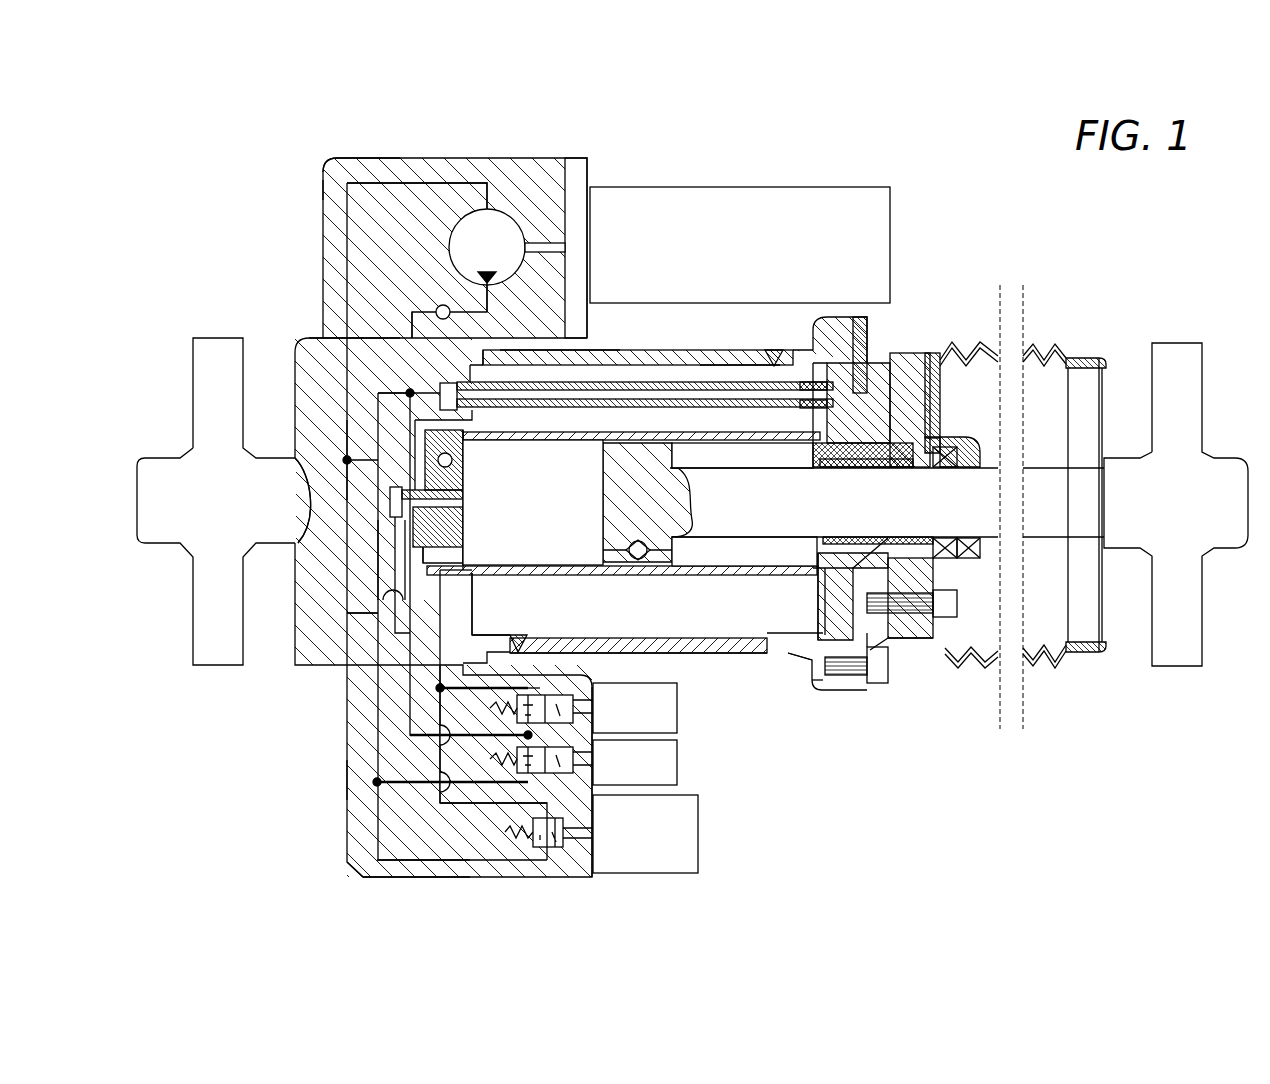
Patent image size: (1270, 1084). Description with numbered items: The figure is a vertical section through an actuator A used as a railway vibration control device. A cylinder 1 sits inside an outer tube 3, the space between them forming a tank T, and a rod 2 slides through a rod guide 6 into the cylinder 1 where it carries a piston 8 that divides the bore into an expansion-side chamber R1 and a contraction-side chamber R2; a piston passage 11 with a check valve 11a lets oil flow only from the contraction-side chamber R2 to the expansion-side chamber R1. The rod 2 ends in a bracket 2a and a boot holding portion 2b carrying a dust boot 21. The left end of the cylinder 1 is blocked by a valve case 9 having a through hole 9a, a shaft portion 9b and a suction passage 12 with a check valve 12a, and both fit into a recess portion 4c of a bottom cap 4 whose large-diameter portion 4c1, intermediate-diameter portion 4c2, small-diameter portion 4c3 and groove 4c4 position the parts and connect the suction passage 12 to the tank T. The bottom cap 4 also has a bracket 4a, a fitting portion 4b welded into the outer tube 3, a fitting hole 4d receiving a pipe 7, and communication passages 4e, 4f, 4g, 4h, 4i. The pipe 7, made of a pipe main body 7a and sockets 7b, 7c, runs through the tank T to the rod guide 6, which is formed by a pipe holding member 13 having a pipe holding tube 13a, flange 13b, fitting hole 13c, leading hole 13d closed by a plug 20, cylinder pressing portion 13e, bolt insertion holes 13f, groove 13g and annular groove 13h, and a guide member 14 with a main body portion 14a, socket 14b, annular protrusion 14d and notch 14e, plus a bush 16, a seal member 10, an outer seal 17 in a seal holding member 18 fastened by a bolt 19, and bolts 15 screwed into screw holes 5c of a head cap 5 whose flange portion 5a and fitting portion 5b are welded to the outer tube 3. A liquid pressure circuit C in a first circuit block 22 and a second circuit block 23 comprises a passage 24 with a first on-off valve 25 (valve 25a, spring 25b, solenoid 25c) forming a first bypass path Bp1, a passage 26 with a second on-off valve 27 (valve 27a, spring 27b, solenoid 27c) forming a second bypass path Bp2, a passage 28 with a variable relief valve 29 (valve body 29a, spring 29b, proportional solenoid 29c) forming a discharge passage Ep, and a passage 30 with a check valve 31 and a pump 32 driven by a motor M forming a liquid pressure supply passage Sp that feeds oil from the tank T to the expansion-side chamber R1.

The actuator A is at (275, 190).
The cylinder 1 is at (665, 576).
The rod 2 is at (1040, 480).
The bracket 2a is at (1195, 405).
The boot holding portion 2b is at (1104, 394).
The outer tube 3 is at (748, 656).
The bottom cap 4 is at (292, 665).
The bracket 4a is at (197, 622).
The fitting portion 4b is at (512, 635).
The recess portion 4c is at (470, 556).
The large-diameter portion 4c1 is at (470, 575).
The intermediate-diameter portion 4c2 is at (465, 548).
The small-diameter portion 4c3 is at (378, 512).
The groove 4c4 is at (420, 410).
The fitting hole 4d is at (405, 360).
The communication passage 4e is at (407, 392).
The communication passage 4f is at (425, 325).
The communication passage 4g is at (360, 670).
The communication passage 4h is at (378, 565).
The communication passage 4i is at (345, 462).
The head cap 5 is at (880, 320).
The flange portion 5a is at (840, 700).
The fitting portion 5b is at (775, 358).
The screw holes 5c is at (830, 692).
The rod guide 6 is at (892, 352).
The pipe 7 is at (655, 380).
The pipe main body 7a is at (622, 380).
The socket 7b is at (495, 410).
The socket 7c is at (730, 378).
The piston 8 is at (600, 450).
The valve case 9 is at (495, 548).
The through hole 9a is at (463, 505).
The shaft portion 9b is at (462, 576).
The seal member 10 is at (938, 442).
The piston passage 11 is at (674, 554).
The check valve 11a is at (612, 538).
The suction passage 12 is at (462, 475).
The check valve 12a is at (454, 460).
The pipe holding member 13 is at (885, 655).
The pipe holding tube 13a is at (825, 358).
The flange 13b is at (852, 695).
The fitting hole 13c is at (795, 404).
The leading hole 13d is at (895, 335).
The cylinder pressing portion 13e is at (792, 450).
The bolt insertion holes 13f is at (878, 690).
The groove 13g is at (858, 467).
The annular groove 13h is at (788, 612).
The guide member 14 is at (920, 660).
The main body portion 14a is at (955, 662).
The socket 14b is at (822, 570).
The annular protrusion 14d is at (957, 580).
The notch 14e is at (820, 465).
The bolts 15 is at (888, 670).
The bush 16 is at (848, 534).
The outer seal 17 is at (975, 445).
The seal holding member 18 is at (942, 378).
The bolt 19 is at (957, 604).
The plug 20 is at (955, 345).
The dust boot 21 is at (1062, 656).
The first circuit block 22 is at (345, 868).
The second circuit block 23 is at (345, 168).
The passage 24 is at (560, 660).
The first on-off valve 25 is at (680, 735).
The valve 25a is at (540, 688).
The spring 25b is at (440, 688).
The solenoid 25c is at (679, 712).
The passage 26 is at (375, 792).
The second on-off valve 27 is at (679, 772).
The valve 27a is at (484, 862).
The spring 27b is at (375, 770).
The solenoid 27c is at (680, 760).
The passage 28 is at (400, 880).
The variable relief valve 29 is at (624, 876).
The valve body 29a is at (562, 850).
The spring 29b is at (517, 850).
The proportional solenoid 29c is at (700, 825).
The passage 30 is at (440, 180).
The check valve 31 is at (440, 305).
The pump 32 is at (505, 212).
The motor M is at (652, 187).
The liquid pressure supply passage Sp is at (400, 176).
The liquid pressure circuit C is at (352, 772).
The discharge passage Ep is at (452, 878).
The first bypass path Bp1 is at (580, 640).
The second bypass path Bp2 is at (345, 818).
The expansion-side chamber R1 is at (780, 564).
The contraction-side chamber R2 is at (576, 510).
The tank T is at (783, 697).